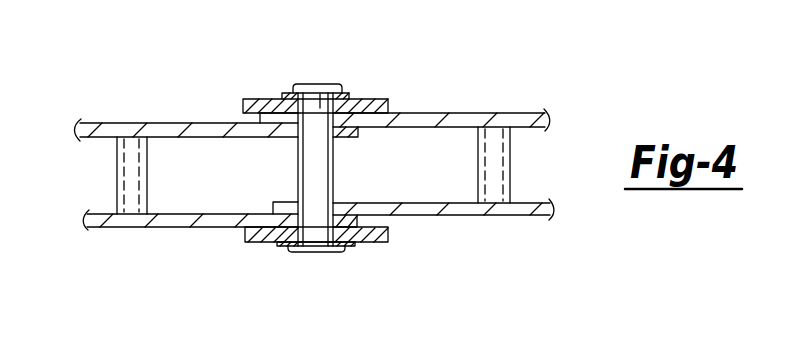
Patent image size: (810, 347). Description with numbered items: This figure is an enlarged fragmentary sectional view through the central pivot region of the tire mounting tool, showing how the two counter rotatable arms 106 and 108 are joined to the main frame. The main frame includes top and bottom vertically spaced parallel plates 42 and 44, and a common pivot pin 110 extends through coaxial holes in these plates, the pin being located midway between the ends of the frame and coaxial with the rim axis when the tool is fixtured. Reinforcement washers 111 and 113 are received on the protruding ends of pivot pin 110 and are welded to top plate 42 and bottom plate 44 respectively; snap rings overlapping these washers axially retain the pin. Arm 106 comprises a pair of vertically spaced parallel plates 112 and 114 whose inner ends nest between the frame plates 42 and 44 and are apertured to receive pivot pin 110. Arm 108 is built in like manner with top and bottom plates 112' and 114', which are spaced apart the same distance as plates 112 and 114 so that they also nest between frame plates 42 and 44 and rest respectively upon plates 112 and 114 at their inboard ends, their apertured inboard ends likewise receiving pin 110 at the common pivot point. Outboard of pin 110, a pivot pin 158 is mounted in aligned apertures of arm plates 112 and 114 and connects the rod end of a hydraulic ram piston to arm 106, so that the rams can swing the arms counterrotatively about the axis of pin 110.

The top plate 42 is at (252, 98).
The bottom plate 44 is at (255, 247).
The counter rotatable arm 106 is at (205, 78).
The counter rotatable arm 108 is at (521, 106).
The common pivot pin 110 is at (320, 84).
The reinforcement washer 111 is at (349, 95).
The arm plate 112 is at (187, 101).
The arm plate 112' is at (441, 95).
The reinforcement washer 113 is at (346, 244).
The arm plate 114 is at (190, 240).
The arm plate 114' is at (443, 239).
The pivot pin 158 is at (137, 174).